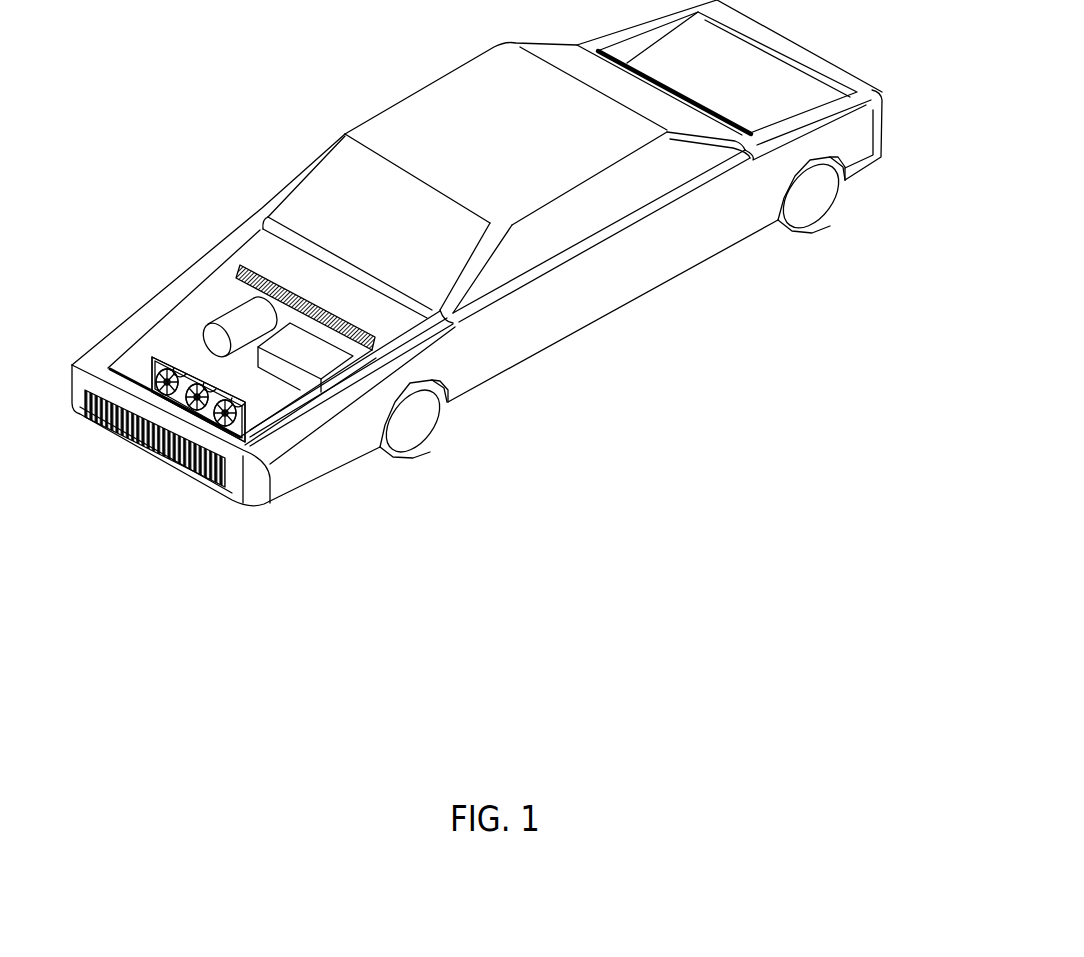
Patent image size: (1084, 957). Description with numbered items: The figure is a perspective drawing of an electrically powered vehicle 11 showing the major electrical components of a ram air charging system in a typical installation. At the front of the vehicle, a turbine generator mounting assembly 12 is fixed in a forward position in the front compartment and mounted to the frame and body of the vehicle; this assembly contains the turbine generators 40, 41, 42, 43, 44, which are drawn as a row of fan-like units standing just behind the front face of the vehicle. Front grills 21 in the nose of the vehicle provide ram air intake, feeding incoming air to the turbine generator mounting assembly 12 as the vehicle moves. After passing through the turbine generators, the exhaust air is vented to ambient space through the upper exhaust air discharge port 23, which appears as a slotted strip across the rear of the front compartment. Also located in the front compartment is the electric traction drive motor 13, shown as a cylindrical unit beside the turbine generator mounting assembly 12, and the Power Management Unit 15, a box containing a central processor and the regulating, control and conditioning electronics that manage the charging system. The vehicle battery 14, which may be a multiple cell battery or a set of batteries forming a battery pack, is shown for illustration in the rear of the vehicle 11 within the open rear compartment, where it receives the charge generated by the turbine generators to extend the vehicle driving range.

The electrically powered vehicle 11 is at (578, 292).
The turbine generator mounting assembly 12 is at (237, 397).
The electric traction drive motor 13 is at (238, 320).
The vehicle battery 14 is at (746, 86).
The Power Management Unit (PMU) 15 is at (300, 350).
The front grills 21 is at (169, 458).
The upper exhaust air discharge port 23 is at (310, 297).
The turbine generator 40 is at (158, 355).
The turbine generator 41 is at (167, 382).
The turbine generator 42 is at (197, 397).
The turbine generator 43 is at (225, 413).
The turbine generator 44 is at (198, 399).